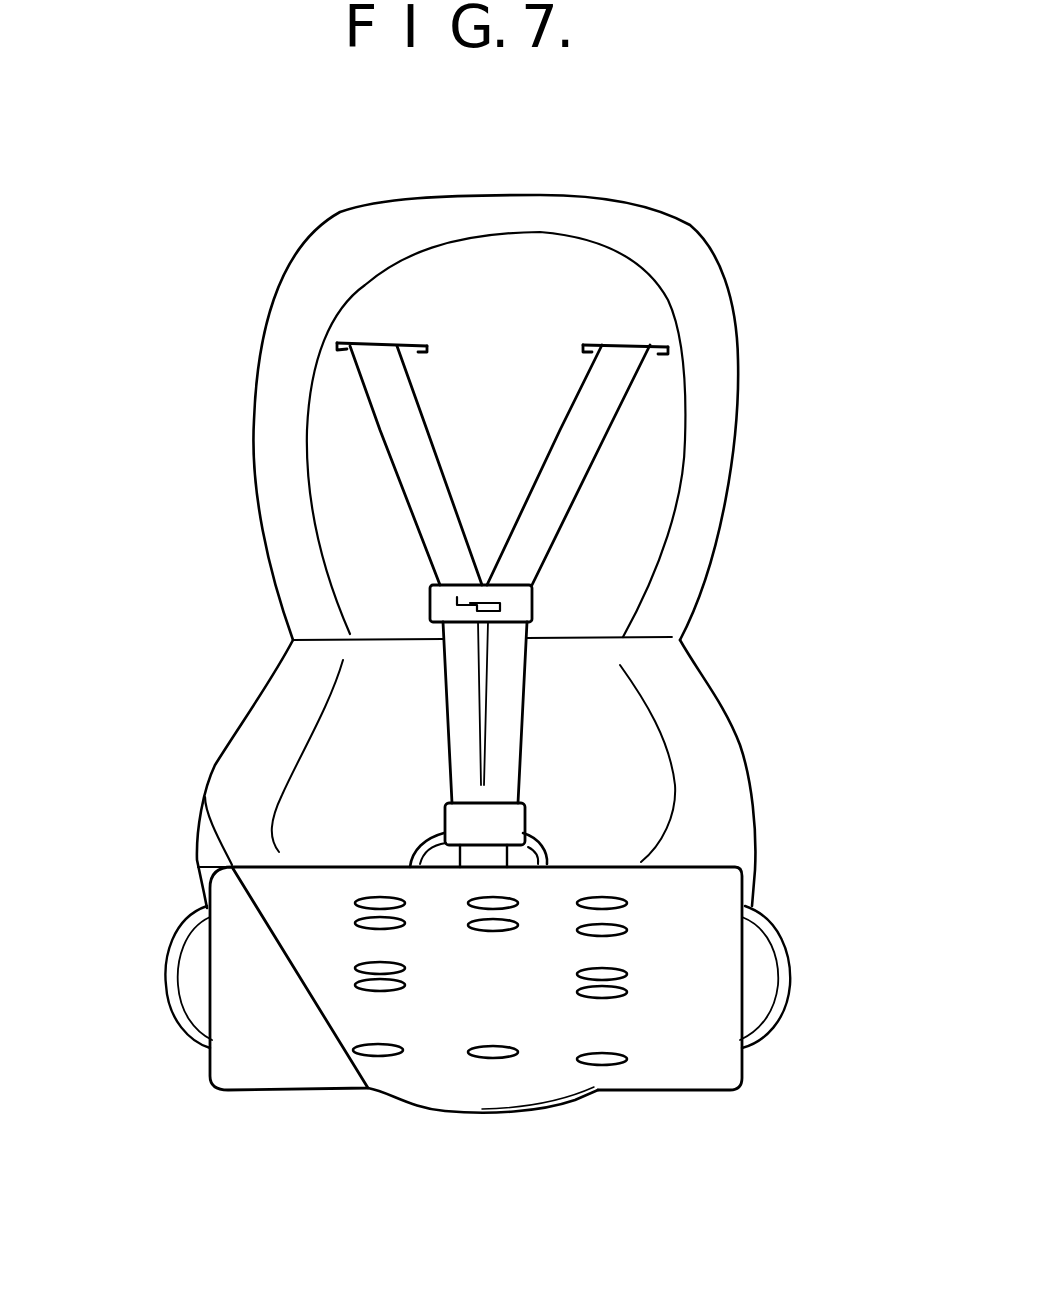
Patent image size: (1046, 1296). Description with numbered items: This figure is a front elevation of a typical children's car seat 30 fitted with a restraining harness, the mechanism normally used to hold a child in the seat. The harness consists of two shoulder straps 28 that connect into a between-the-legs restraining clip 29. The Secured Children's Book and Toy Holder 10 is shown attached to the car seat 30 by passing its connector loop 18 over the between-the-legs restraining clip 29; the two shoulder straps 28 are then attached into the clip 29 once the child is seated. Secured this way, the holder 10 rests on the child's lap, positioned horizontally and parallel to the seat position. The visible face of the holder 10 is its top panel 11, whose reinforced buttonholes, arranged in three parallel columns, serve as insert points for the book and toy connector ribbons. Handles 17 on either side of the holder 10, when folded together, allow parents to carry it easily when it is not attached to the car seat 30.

The Secured Children's Book and Toy Holder 10 is at (542, 1058).
The top panel 11 is at (490, 981).
The handles 17 is at (172, 1017).
The connector loop 18 is at (547, 860).
The shoulder straps 28 is at (442, 551).
The between-the-legs restraining clip 29 is at (460, 822).
The car seat 30 is at (703, 285).